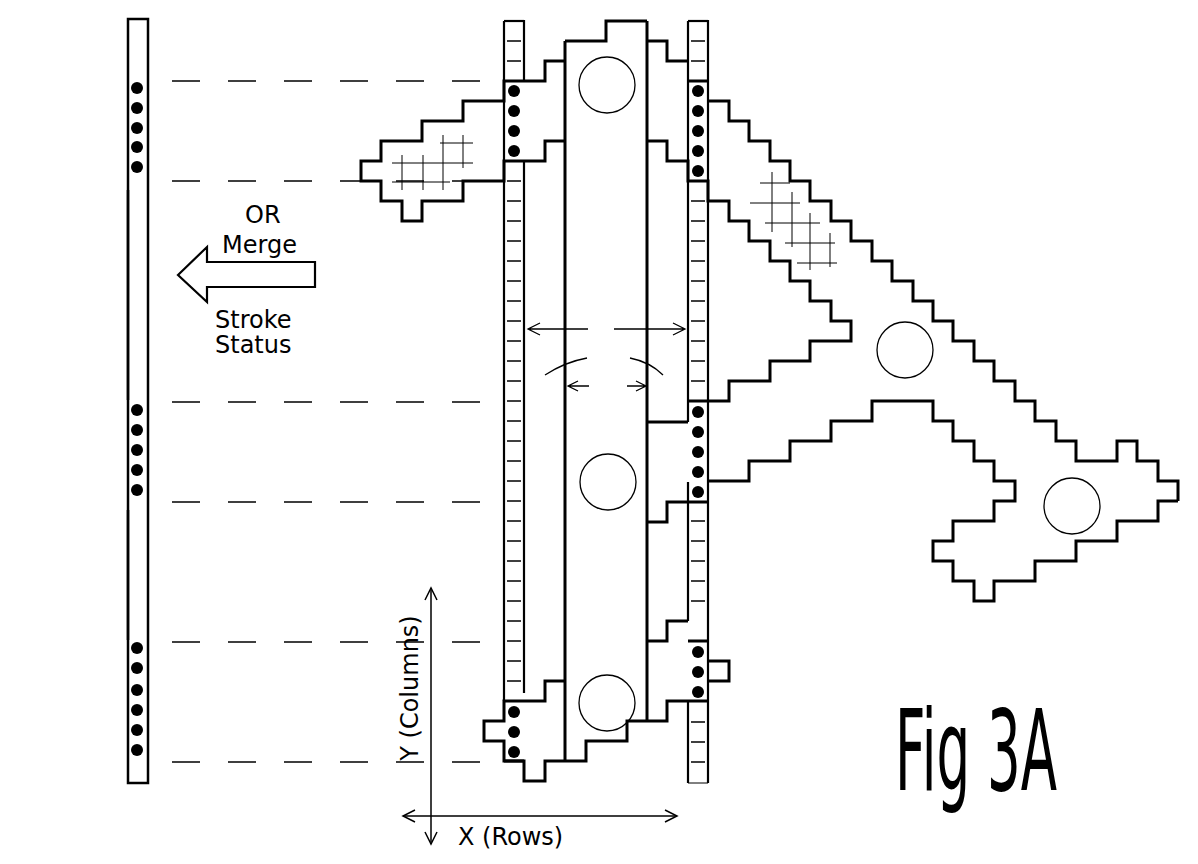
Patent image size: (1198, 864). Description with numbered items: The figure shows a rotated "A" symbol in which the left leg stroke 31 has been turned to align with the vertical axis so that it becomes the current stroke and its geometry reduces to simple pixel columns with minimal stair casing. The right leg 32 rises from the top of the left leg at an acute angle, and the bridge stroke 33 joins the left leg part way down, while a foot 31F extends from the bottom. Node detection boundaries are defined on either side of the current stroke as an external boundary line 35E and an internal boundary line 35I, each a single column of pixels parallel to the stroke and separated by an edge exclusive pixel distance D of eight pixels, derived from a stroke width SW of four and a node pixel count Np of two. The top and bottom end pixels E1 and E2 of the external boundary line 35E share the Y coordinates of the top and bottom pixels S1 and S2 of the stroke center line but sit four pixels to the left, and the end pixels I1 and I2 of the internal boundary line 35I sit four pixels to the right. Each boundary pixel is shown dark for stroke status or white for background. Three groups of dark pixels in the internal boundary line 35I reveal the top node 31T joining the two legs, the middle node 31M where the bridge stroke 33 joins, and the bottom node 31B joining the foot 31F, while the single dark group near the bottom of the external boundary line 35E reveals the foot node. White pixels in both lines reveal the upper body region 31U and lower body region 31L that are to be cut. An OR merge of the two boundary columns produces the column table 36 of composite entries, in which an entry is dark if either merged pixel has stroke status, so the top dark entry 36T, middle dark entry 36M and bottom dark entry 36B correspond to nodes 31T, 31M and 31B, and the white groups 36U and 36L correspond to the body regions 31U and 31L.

The left leg stroke 31 is at (563, 448).
The top node 31T is at (606, 96).
The upper body region 31U is at (582, 302).
The middle node 31M is at (608, 487).
The lower body region 31L is at (597, 567).
The bottom node 31B is at (610, 698).
The foot 31F is at (677, 690).
The right leg 32 is at (860, 277).
The bridge stroke 33 is at (770, 435).
The external boundary line 35E is at (497, 52).
The internal boundary line 35I is at (710, 52).
The column table of composite entries 36 is at (138, 45).
The top dark entry 36T is at (127, 128).
The upper white background entries 36U is at (125, 330).
The middle dark entry 36M is at (127, 448).
The lower white background entries 36L is at (125, 580).
The bottom dark entry 36B is at (127, 722).
The top end pixel of external boundary line E1 is at (512, 24).
The bottom end pixel of external boundary line E2 is at (508, 768).
The top end pixel of internal boundary line I1 is at (705, 25).
The bottom end pixel of internal boundary line I2 is at (700, 777).
The top end pixel of stroke center line S1 is at (616, 18).
The bottom end pixel of stroke center line S2 is at (598, 744).
The pixel distance between boundary lines D is at (606, 330).
The node pixel offset Np is at (604, 359).
The stroke width SW is at (607, 386).